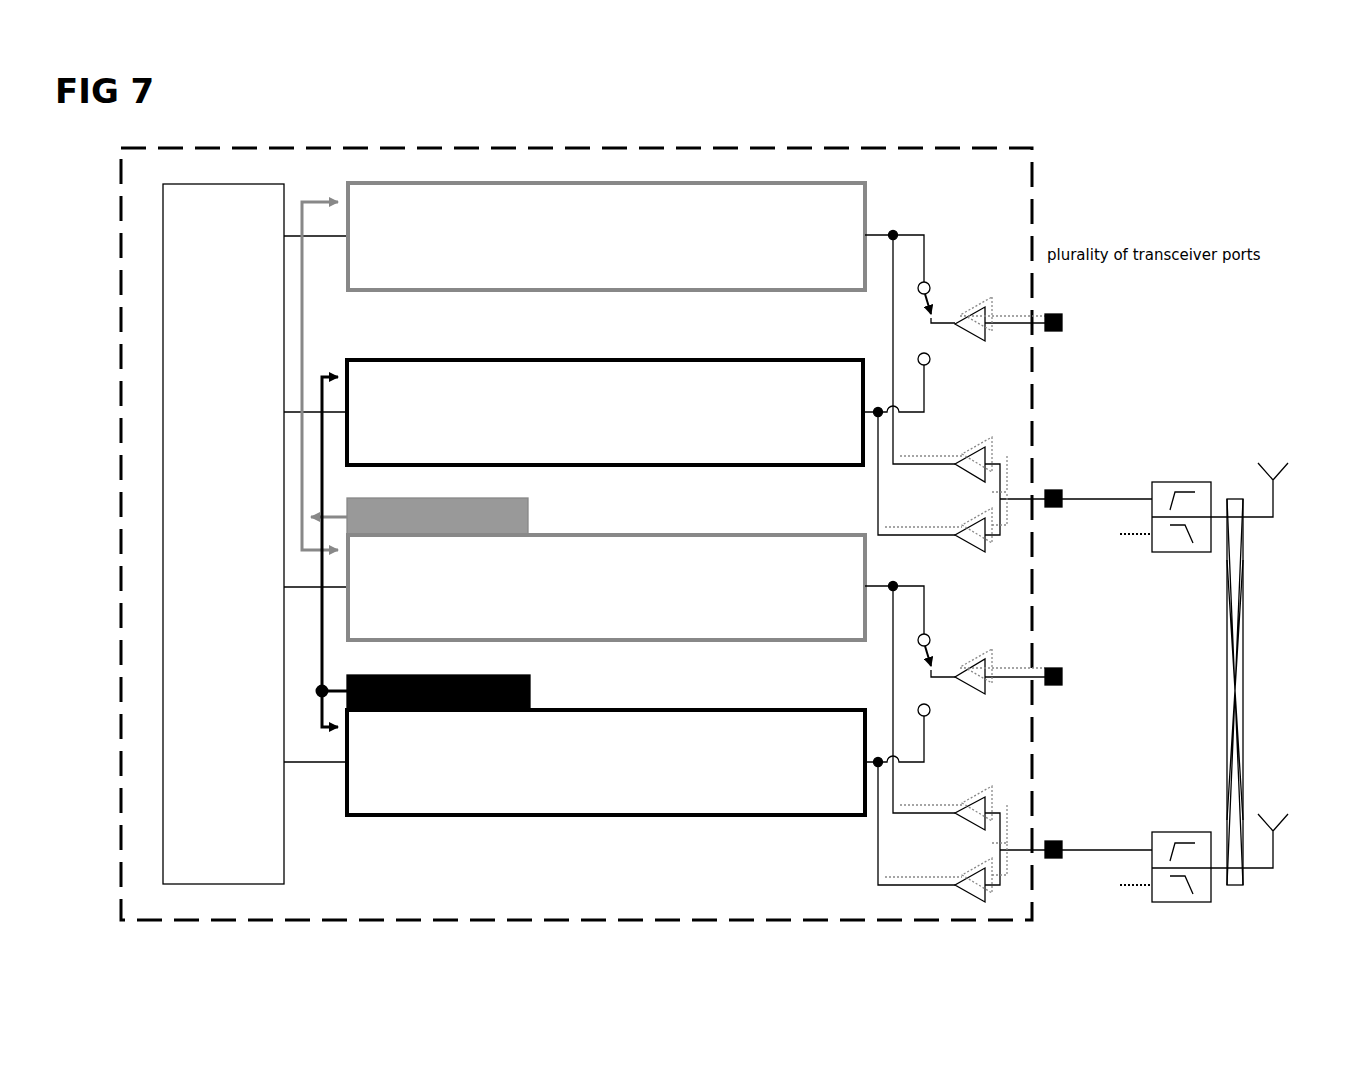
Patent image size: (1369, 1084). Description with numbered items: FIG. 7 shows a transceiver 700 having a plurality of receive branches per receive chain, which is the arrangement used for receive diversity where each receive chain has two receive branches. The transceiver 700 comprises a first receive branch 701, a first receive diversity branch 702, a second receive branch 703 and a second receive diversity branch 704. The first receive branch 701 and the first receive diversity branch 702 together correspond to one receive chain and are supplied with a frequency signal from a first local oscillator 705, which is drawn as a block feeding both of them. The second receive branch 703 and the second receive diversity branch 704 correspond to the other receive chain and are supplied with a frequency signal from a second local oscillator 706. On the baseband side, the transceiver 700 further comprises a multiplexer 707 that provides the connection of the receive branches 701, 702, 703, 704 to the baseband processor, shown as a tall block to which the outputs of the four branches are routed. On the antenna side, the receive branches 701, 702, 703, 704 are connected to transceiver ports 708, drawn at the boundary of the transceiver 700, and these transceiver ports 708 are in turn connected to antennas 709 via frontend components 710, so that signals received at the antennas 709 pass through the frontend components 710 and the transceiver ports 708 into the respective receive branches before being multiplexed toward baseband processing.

The transceiver 700 is at (985, 148).
The first receive branch 701 is at (790, 710).
The first receive diversity branch 702 is at (765, 360).
The second receive branch 703 is at (740, 535).
The second receive diversity branch 704 is at (722, 183).
The first local oscillator 705 is at (530, 680).
The second local oscillator 706 is at (530, 508).
The multiplexer 707 is at (225, 184).
The transceiver ports 708 is at (1062, 318).
The antennas 709 is at (1275, 468).
The frontend components 710 is at (1180, 482).